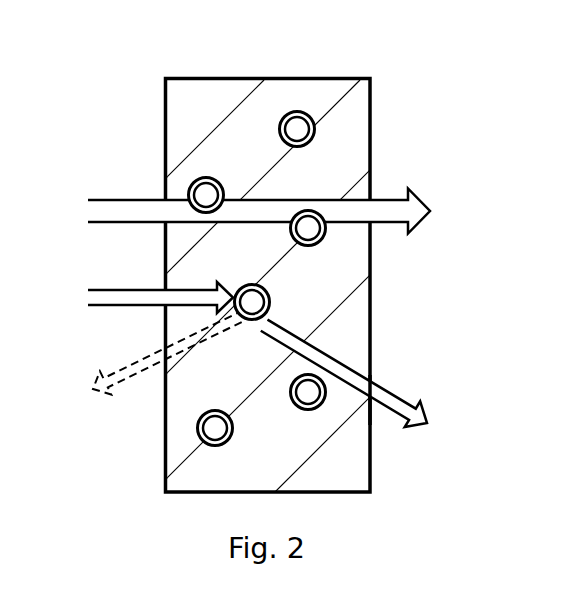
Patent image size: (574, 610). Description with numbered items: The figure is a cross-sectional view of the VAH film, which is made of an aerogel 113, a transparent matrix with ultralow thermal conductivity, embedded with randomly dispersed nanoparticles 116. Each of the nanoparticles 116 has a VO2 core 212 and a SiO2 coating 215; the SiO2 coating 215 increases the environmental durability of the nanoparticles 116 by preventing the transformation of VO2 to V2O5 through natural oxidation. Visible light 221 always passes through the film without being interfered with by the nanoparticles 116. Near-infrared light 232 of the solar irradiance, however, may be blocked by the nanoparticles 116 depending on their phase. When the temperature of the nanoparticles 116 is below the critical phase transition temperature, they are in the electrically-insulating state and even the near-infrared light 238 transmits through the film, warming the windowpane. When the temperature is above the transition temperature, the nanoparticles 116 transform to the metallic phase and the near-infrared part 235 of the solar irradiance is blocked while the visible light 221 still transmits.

The aerogel 113 is at (188, 128).
The nanoparticles 116 is at (333, 79).
The VO2 core 212 is at (298, 127).
The SiO2 coating 215 is at (315, 135).
The visible light 221 is at (127, 210).
The near-infrared light 232 is at (110, 295).
The near-infrared part 235 is at (128, 375).
The near-infrared light 238 is at (390, 398).